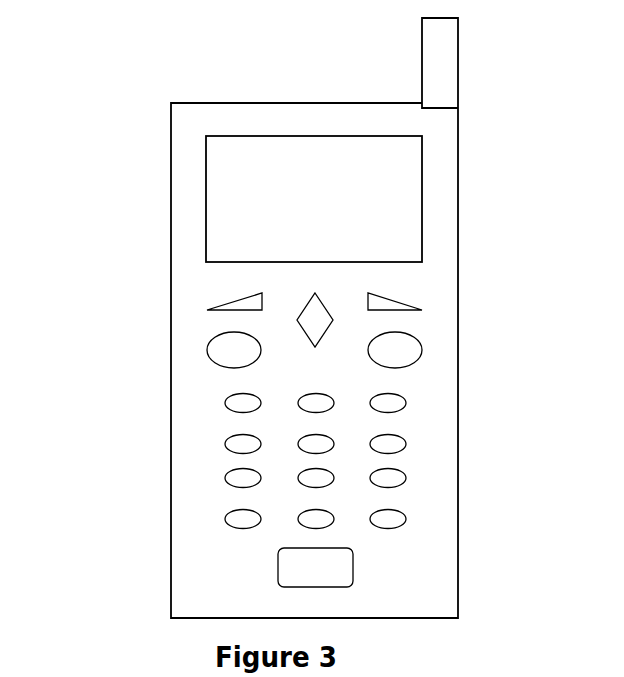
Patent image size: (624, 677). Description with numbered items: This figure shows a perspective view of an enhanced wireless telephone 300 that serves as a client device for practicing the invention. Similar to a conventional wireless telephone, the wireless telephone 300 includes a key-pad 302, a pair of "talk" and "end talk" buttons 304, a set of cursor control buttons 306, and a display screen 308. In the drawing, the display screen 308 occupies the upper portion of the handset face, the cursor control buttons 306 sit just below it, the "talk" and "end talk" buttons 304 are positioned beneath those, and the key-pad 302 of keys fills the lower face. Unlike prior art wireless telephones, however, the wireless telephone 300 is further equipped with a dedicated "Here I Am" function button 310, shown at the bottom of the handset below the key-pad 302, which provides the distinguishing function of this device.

The wireless telephone 300 is at (117, 120).
The key-pad 302 is at (207, 410).
The "talk" and "end talk" buttons 304 is at (368, 358).
The cursor control buttons 306 is at (348, 295).
The display screen 308 is at (223, 192).
The "Here I Am" function button 310 is at (278, 562).